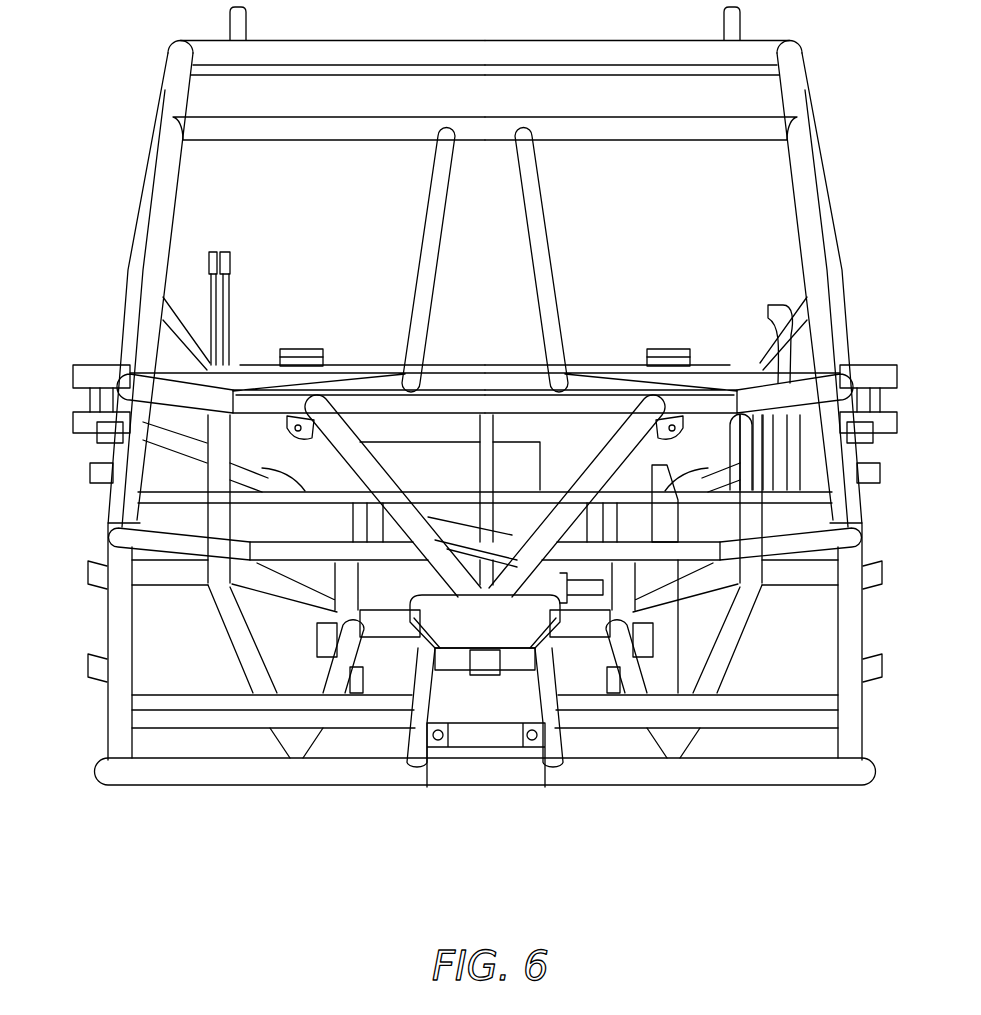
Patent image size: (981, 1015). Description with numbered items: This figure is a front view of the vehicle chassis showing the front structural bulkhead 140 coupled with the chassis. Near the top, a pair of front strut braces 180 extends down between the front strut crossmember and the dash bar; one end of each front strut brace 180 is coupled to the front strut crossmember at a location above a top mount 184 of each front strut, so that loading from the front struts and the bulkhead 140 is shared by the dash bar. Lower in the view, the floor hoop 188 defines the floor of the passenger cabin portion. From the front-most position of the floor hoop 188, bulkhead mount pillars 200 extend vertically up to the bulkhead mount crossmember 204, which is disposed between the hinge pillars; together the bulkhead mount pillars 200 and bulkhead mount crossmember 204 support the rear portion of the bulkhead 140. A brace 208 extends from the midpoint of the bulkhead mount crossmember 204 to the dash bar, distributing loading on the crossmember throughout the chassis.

The bulkhead 140 is at (493, 768).
The front strut brace 180 is at (397, 382).
The top mount 184 is at (297, 428).
The floor hoop 188 is at (767, 775).
The bulkhead mount pillar 200 is at (420, 727).
The bulkhead mount crossmember 204 is at (183, 541).
The brace 208 is at (485, 453).